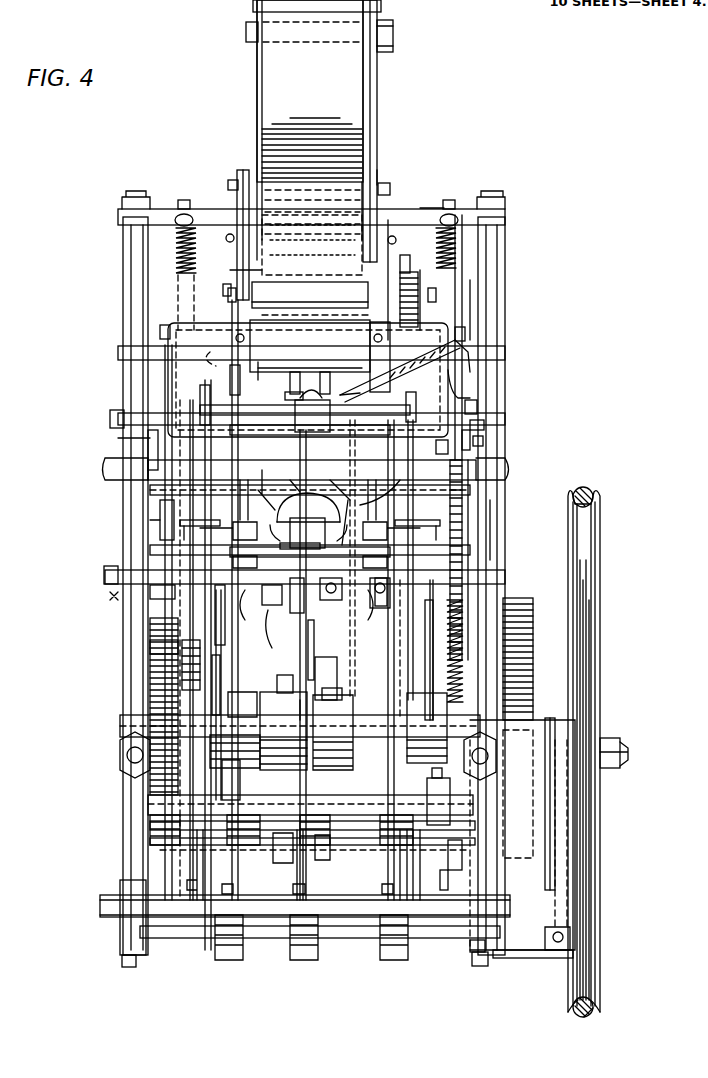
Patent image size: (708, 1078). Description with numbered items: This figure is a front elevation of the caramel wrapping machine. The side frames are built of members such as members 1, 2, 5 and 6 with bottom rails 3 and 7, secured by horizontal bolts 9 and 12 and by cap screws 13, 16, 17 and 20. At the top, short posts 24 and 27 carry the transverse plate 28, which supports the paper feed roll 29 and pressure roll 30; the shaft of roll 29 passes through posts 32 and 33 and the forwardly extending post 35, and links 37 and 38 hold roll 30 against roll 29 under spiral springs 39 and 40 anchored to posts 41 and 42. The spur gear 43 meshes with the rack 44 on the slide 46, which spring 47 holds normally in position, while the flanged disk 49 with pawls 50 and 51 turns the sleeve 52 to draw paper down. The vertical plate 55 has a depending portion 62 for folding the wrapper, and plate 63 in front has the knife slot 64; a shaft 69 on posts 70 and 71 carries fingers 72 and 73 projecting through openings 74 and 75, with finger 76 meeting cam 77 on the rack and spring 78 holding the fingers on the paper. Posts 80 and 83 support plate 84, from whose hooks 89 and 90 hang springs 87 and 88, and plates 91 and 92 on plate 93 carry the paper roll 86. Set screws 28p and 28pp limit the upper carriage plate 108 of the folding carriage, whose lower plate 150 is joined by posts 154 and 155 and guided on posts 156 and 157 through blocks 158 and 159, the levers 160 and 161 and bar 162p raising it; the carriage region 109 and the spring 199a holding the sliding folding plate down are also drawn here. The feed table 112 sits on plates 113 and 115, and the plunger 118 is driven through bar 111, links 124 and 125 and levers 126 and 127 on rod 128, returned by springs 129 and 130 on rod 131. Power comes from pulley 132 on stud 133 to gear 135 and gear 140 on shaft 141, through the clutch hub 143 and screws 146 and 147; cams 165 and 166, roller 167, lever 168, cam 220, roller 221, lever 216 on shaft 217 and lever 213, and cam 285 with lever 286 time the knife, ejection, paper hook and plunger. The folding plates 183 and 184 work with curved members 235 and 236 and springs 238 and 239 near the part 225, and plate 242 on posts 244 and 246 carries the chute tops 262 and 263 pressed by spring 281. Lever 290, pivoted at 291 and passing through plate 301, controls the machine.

The side frame member 1 is at (490, 530).
The side frame member 2 is at (484, 441).
The bottom rail 3 is at (470, 950).
The upright member 5 is at (120, 530).
The side frame member 6 is at (118, 438).
The bottom rail 7 is at (120, 944).
The horizontally extending bolt 9 is at (478, 470).
The horizontally extending bolt 12 is at (442, 914).
The cap screw 13 is at (480, 966).
The cap screw 16 is at (486, 426).
The cap screw 17 is at (128, 968).
The cap screw 20 is at (118, 420).
The short post 24 is at (478, 408).
The short post 27 is at (124, 385).
The transversely extending plate 28 is at (118, 355).
The set screw 28p is at (160, 332).
The set screw 28pp is at (462, 336).
The paper feed roll 29 is at (262, 270).
The pressure roll 30 is at (310, 295).
The post 32 is at (246, 172).
The post 33 is at (378, 178).
The post 35 is at (480, 318).
The link 37 is at (228, 183).
The link 38 is at (390, 192).
The spiral spring 39 is at (227, 239).
The spiral spring 40 is at (396, 240).
The post 41 is at (399, 280).
The post 42 is at (226, 290).
The spur gear 43 is at (412, 286).
The rack 44 is at (472, 264).
The slide 46 is at (470, 516).
The spring 47 is at (476, 578).
The flanged disk 49 is at (400, 266).
The spring operating pawl 50 is at (416, 261).
The spring operating pawl 51 is at (416, 322).
The sleeve 52 is at (436, 293).
The vertically extending plate 55 is at (230, 364).
The depending portion 62 is at (308, 517).
The plate 63 is at (262, 315).
The slot 64 is at (290, 368).
The shaft 69 is at (258, 366).
The post 70 is at (232, 385).
The post 71 is at (372, 372).
The finger 72 is at (290, 380).
The finger 73 is at (328, 386).
The opening 74 is at (285, 395).
The opening 75 is at (350, 396).
The finger 76 is at (470, 368).
The cam 77 is at (470, 390).
The spiral spring 78 is at (395, 360).
The post 80 is at (480, 292).
The post 83 is at (124, 287).
The plate 84 is at (505, 218).
The paper feed roll 86 is at (317, 91).
The spring 87 is at (458, 242).
The spring 88 is at (178, 266).
The hook 89 is at (450, 200).
The hook 90 is at (184, 200).
The vertically extending plate 91 is at (378, 120).
The vertically extending plate 92 is at (260, 106).
The plate 93 is at (422, 207).
The upper carriage plate 108 is at (150, 492).
The carriage 109 is at (238, 333).
The bar 111 is at (293, 412).
The feed table 112 is at (340, 432).
The plate 113 is at (150, 438).
The plate 115 is at (470, 442).
The plunger 118 is at (314, 412).
The link 124 is at (205, 395).
The link 125 is at (414, 399).
The operating lever 126 is at (400, 626).
The operating lever 127 is at (224, 632).
The rod 128 is at (345, 940).
The spring 129 is at (244, 600).
The spring 130 is at (381, 600).
The transversely extending rod 131 is at (104, 578).
The pulley 132 is at (601, 586).
The stud 133 is at (623, 748).
The large gear 135 is at (530, 598).
The gear 140 is at (150, 665).
The shaft 141 is at (382, 716).
The flanged hub 143 is at (222, 660).
The screw 146 is at (226, 680).
The screw 147 is at (228, 780).
The lower carriage plate 150 is at (150, 547).
The post 154 is at (160, 506).
The post 155 is at (462, 508).
The post 156 is at (145, 464).
The post 157 is at (436, 450).
The block 158 is at (150, 590).
The block 159 is at (434, 626).
The lever 160 is at (198, 644).
The lever 161 is at (430, 682).
The bar 162p is at (360, 888).
The cam 165 is at (330, 672).
The cam 166 is at (290, 676).
The roller 167 is at (334, 686).
The lever 168 is at (314, 660).
The upper folding plate 183 is at (208, 520).
The upper folding plate 184 is at (417, 521).
The link 199a is at (405, 492).
The lever 213 is at (452, 884).
The lever 216 is at (446, 862).
The shaft 217 is at (338, 800).
The cam 220 is at (410, 750).
The roller 221 is at (427, 780).
The rod 225 is at (304, 575).
The curved member 235 is at (264, 597).
The curved member 236 is at (357, 607).
The spring 238 is at (328, 612).
The spring 239 is at (279, 631).
The plate 242 is at (350, 520).
The short post 244 is at (334, 490).
The short post 246 is at (258, 490).
The chute top 262 is at (307, 533).
The chute top 263 is at (300, 540).
The spring 281 is at (296, 490).
The cam 285 is at (308, 724).
The operating lever 286 is at (302, 700).
The lever 290 is at (558, 738).
The pivot 291 is at (552, 958).
The plate 301 is at (522, 835).